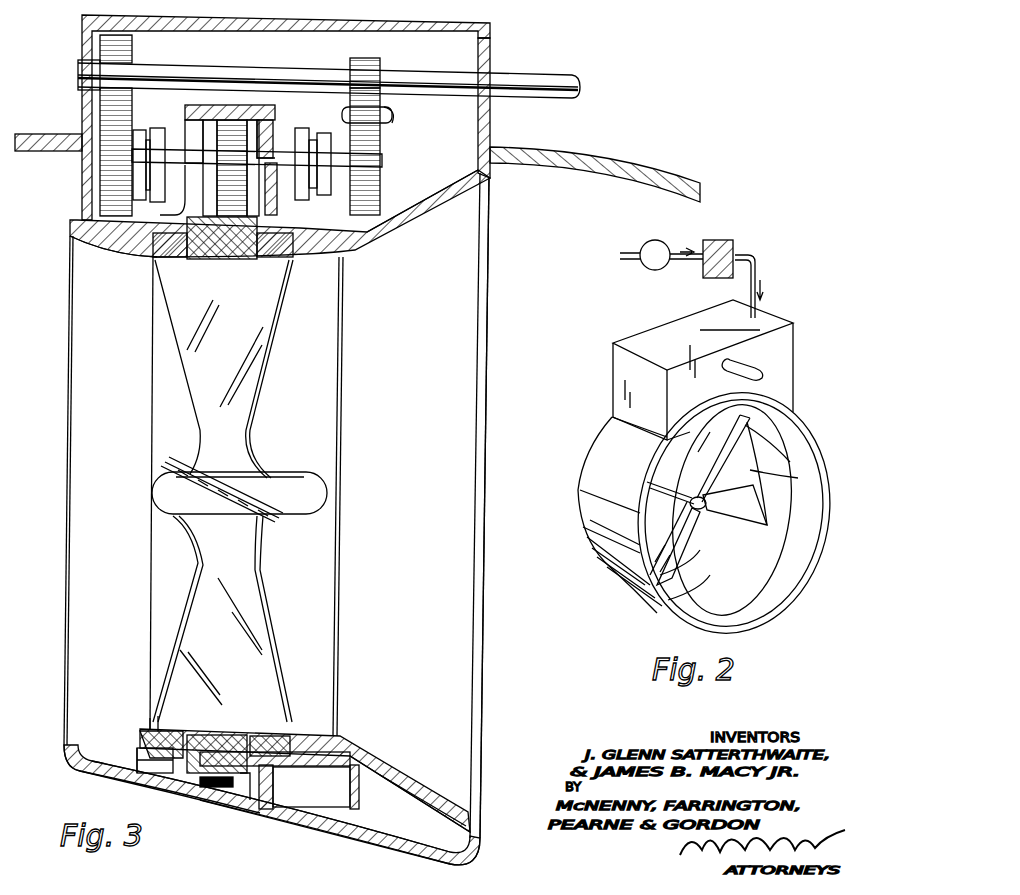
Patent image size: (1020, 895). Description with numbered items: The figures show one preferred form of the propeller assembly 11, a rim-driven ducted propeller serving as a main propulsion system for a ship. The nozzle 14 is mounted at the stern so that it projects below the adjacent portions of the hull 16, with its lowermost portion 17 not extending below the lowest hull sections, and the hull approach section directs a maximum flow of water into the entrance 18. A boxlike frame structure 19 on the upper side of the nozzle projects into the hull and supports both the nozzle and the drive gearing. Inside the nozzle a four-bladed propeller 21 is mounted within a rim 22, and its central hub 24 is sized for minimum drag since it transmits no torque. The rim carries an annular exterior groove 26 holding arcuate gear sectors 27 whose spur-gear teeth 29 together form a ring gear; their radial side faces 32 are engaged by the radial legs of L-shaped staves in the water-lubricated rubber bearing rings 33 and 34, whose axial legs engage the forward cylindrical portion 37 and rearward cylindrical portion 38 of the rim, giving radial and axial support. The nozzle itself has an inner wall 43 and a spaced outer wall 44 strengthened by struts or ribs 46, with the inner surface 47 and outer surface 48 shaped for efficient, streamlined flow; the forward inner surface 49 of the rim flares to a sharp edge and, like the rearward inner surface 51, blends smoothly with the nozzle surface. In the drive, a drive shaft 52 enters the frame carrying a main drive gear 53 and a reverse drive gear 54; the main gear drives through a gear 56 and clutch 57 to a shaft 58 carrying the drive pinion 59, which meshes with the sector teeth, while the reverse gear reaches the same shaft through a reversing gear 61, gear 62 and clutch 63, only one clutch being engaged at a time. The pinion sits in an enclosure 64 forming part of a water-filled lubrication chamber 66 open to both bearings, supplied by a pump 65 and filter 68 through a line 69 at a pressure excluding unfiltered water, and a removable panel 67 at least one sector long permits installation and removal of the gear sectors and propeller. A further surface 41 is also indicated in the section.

In FIG. 3, the propeller assembly 11 is at (516, 686).
In FIG. 2, the propeller assembly 11 is at (605, 586).
In FIG. 3, the nozzle 14 is at (482, 748).
In FIG. 2, the nozzle 14 is at (648, 605).
In FIG. 3, the hull 16 is at (637, 164).
In FIG. 3, the lowermost portion 17 is at (470, 862).
In FIG. 3, the entrance 18 is at (480, 397).
In FIG. 2, the entrance 18 is at (790, 578).
In FIG. 3, the boxlike frame structure 19 is at (493, 35).
In FIG. 2, the boxlike frame structure 19 is at (780, 318).
In FIG. 3, the four-bladed propeller 21 is at (265, 372).
In FIG. 2, the four-bladed propeller 21 is at (742, 520).
In FIG. 3, the rim 22 is at (343, 258).
In FIG. 2, the rim 22 is at (722, 580).
In FIG. 3, the central hub 24 is at (305, 512).
In FIG. 2, the central hub 24 is at (714, 498).
In FIG. 3, the annular exterior groove 26 is at (205, 250).
In FIG. 3, the gear sectors 27 is at (232, 252).
In FIG. 3, the spur-gear teeth 29 is at (240, 800).
In FIG. 3, the radial side faces 32 is at (182, 730).
In FIG. 3, the bearing ring 33 is at (135, 250).
In FIG. 3, the bearing ring 34 is at (372, 238).
In FIG. 3, the forward cylindrical portion 37 is at (348, 750).
In FIG. 3, the rearward cylindrical portion 38 is at (136, 754).
In FIG. 3, the inner wall 41 is at (390, 768).
In FIG. 3, the inner wall 43 is at (425, 790).
In FIG. 3, the outer wall 44 is at (355, 848).
In FIG. 3, the struts or ribs 46 is at (359, 800).
In FIG. 3, the inner surface 47 is at (66, 745).
In FIG. 3, the outer surface 48 is at (290, 828).
In FIG. 3, the forward inner surface 49 is at (325, 736).
In FIG. 3, the rearward inner surface 51 is at (150, 724).
In FIG. 3, the drive shaft 52 is at (560, 72).
In FIG. 2, the drive shaft 52 is at (752, 365).
In FIG. 3, the main drive gear 53 is at (134, 48).
In FIG. 3, the reverse drive gear 54 is at (382, 58).
In FIG. 3, the gear 56 is at (132, 128).
In FIG. 3, the clutch 57 is at (166, 136).
In FIG. 3, the shaft 58 is at (168, 208).
In FIG. 3, the drive pinion 59 is at (272, 120).
In FIG. 3, the reversing gear 61 is at (382, 128).
In FIG. 3, the gear 62 is at (384, 174).
In FIG. 3, the clutch 63 is at (318, 132).
In FIG. 3, the enclosure 64 is at (278, 200).
In FIG. 2, the pump 65 is at (652, 268).
In FIG. 3, the lubrication chamber 66 is at (220, 120).
In FIG. 3, the removable panel 67 is at (185, 795).
In FIG. 2, the filter 68 is at (722, 240).
In FIG. 2, the line 69 is at (758, 268).